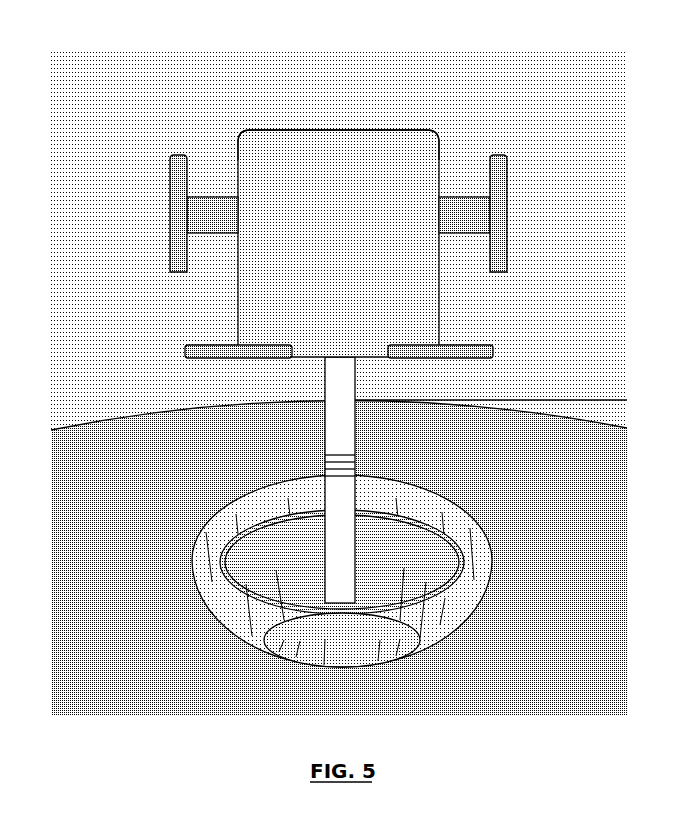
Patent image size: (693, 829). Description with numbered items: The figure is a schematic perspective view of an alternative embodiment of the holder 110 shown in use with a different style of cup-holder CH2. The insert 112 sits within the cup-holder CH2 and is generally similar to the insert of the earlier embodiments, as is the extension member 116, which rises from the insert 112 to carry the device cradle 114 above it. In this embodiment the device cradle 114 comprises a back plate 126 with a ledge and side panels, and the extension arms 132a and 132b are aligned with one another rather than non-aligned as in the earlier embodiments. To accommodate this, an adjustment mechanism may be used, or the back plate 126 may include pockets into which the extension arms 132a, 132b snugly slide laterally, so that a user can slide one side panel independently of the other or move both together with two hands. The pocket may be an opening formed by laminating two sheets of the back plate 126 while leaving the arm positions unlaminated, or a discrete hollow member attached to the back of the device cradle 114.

The downhole tool assembly 110 is at (331, 185).
The device cradle 114 is at (336, 129).
The back plate 126 is at (360, 227).
The extension arm 132a is at (212, 195).
The extension arm 132b is at (457, 196).
The extension member 116 is at (360, 399).
The insert 112 is at (245, 543).
The cup-holder CH2 is at (482, 523).